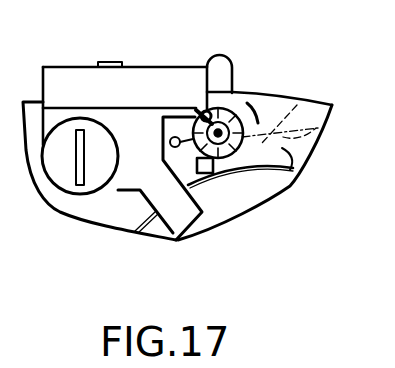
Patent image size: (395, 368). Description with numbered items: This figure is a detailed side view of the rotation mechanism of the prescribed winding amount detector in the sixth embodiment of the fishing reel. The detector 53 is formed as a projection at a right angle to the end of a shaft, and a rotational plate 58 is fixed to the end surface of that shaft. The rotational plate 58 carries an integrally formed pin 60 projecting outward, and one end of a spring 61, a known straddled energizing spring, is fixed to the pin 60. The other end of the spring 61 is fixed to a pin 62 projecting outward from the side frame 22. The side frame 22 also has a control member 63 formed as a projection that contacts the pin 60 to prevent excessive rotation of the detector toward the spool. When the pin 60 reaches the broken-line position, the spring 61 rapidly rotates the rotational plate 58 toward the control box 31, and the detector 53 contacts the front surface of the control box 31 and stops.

The side frame 22 is at (268, 100).
The control box 31 is at (113, 78).
The detector 53 is at (225, 62).
The rotational plate 58 is at (238, 92).
The pin 60 is at (197, 106).
The spring 61 is at (175, 136).
The pin 62 is at (163, 143).
The control member 63 is at (212, 174).